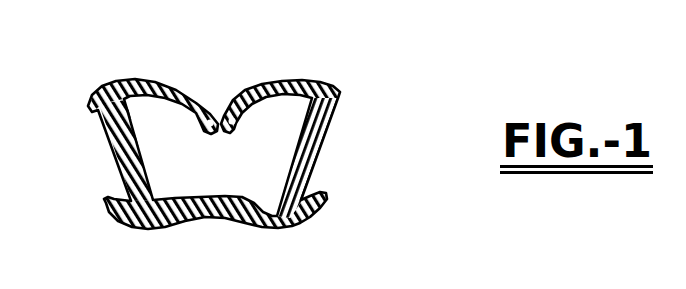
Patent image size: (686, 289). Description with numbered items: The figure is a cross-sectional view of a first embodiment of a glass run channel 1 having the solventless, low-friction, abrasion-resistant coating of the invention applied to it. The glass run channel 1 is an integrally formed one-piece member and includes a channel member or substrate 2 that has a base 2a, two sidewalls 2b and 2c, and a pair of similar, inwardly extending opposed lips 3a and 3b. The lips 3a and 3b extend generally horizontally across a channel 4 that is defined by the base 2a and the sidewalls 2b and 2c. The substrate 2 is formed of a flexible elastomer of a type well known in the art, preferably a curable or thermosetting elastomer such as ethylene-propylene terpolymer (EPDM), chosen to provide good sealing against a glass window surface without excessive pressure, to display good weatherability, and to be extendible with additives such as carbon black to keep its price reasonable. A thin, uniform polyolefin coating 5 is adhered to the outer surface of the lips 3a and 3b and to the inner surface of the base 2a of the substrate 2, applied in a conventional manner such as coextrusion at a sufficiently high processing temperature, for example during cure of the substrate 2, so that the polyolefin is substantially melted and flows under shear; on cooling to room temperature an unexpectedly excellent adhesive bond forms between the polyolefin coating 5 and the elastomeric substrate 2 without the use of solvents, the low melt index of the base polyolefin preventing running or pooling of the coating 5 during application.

The glass run channel 1 is at (352, 78).
The channel member or substrate 2 is at (216, 148).
The base 2a is at (212, 216).
The sidewall 2b is at (110, 143).
The sidewall 2c is at (310, 171).
The lip 3a is at (162, 101).
The lip 3b is at (252, 104).
The channel 4 is at (146, 180).
The polyolefin coating 5 is at (162, 88).